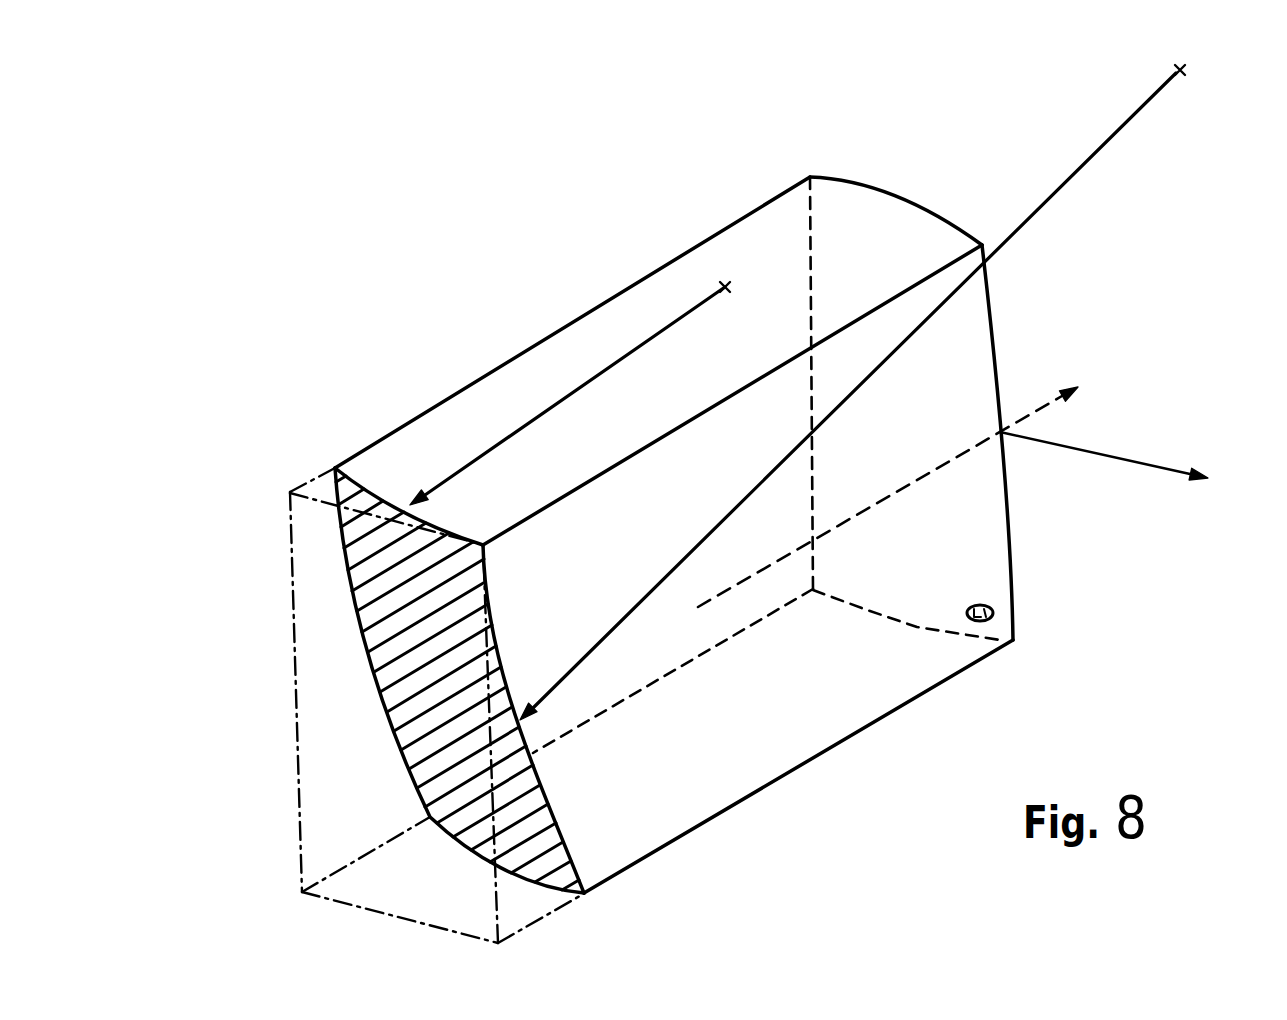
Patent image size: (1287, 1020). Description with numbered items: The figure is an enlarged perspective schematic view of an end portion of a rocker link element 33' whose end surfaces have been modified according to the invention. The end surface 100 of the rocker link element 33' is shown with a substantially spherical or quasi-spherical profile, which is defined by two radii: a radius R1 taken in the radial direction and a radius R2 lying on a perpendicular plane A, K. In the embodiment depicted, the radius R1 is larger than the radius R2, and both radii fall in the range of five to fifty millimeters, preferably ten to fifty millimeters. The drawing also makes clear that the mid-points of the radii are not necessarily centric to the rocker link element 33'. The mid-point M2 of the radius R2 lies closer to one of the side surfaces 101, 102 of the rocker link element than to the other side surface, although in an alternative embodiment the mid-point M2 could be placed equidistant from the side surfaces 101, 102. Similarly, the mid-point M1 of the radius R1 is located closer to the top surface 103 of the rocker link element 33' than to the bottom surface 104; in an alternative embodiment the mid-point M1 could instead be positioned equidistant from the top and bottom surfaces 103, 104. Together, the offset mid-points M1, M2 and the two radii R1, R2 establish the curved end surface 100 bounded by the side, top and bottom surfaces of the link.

The end surface 100 is at (360, 547).
The side surface 101 is at (790, 228).
The side surface 102 is at (972, 318).
The top surface 103 is at (403, 447).
The bottom surface 104 is at (753, 762).
The rocker link element 33' is at (572, 322).
The radius R1 is at (848, 396).
The radius R2 is at (567, 396).
The mid-point M1 is at (1205, 71).
The mid-point M2 is at (749, 279).
The perpendicular plane A is at (903, 489).
The perpendicular plane K is at (1127, 470).